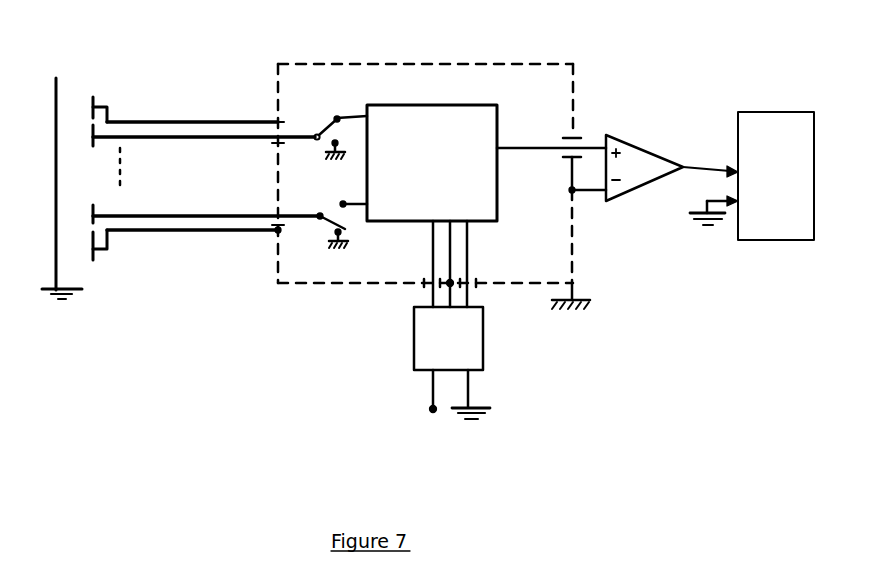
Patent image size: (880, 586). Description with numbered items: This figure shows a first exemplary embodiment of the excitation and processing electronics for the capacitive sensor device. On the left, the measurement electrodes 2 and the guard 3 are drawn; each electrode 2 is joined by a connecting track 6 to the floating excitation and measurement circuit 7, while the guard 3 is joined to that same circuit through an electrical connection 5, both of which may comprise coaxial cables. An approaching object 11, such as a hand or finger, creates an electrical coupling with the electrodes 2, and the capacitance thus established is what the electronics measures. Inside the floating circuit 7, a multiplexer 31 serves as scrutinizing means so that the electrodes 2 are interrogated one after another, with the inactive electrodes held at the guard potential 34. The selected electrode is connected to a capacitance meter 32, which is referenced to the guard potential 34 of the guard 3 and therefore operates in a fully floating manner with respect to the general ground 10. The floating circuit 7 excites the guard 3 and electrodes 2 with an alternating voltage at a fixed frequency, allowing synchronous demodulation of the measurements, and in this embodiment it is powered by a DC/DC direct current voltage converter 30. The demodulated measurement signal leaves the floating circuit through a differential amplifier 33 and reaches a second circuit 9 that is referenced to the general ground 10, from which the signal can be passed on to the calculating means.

The measurement electrode 2 is at (92, 131).
The guard 3 is at (92, 97).
The electrical connection 5 is at (173, 122).
The connecting track 6 is at (205, 140).
The floating excitation and measurement circuit 7 is at (540, 97).
The second circuit 9 is at (748, 112).
The general ground 10 is at (58, 305).
The object 11 is at (56, 78).
The DC/DC direct current voltage converter 30 is at (414, 353).
The multiplexer 31 is at (343, 114).
The capacitance meter 32 is at (452, 105).
The differential amplifier 33 is at (632, 143).
The guard potential 34 is at (331, 250).